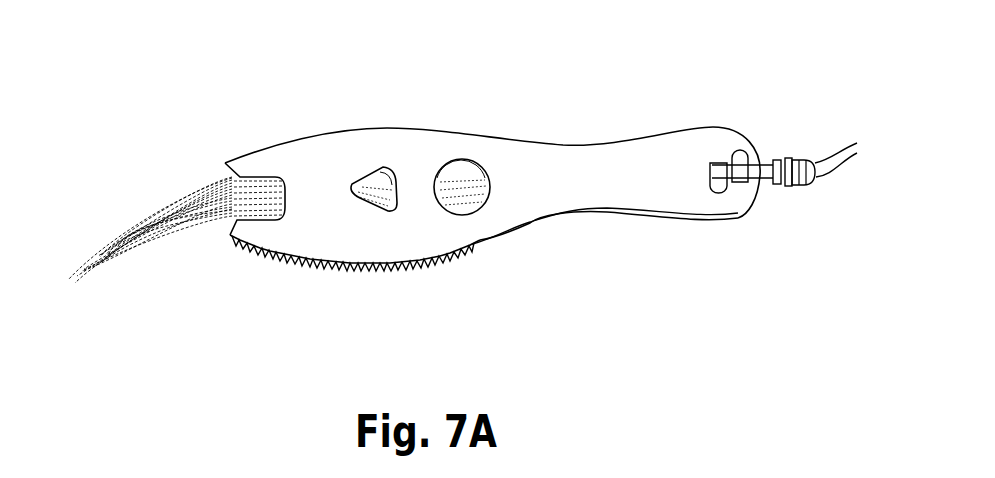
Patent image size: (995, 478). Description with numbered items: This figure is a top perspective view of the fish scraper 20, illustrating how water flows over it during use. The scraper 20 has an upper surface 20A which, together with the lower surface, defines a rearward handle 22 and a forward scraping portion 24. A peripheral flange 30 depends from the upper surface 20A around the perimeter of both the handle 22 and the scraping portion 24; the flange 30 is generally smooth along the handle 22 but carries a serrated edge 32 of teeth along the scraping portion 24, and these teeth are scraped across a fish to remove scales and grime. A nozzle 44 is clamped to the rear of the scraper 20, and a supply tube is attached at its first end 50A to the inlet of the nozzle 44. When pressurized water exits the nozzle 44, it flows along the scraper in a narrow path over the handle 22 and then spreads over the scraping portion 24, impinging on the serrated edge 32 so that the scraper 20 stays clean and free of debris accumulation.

The scraper 20 is at (492, 156).
The upper surface 20A is at (558, 167).
The handle 22 is at (760, 307).
The scraping portion 24 is at (480, 308).
The peripheral flange 30 is at (623, 218).
The serrated edge 32 is at (380, 268).
The nozzle 44 is at (780, 161).
The first end of tube 50A is at (823, 160).